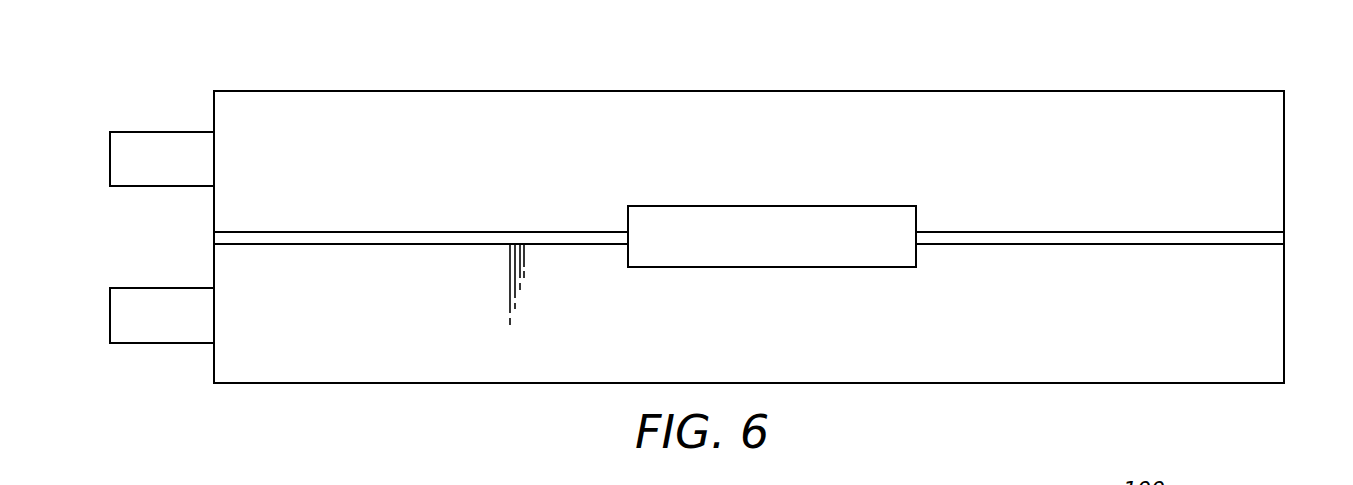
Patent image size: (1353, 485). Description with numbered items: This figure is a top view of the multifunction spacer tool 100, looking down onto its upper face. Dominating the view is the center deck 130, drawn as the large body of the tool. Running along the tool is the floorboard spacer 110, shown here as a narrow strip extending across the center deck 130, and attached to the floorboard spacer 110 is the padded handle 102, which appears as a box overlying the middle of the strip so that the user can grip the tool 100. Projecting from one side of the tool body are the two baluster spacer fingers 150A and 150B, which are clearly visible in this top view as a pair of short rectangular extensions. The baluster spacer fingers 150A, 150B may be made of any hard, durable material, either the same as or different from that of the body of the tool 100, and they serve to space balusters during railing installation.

The tool 100 is at (1273, 68).
The center deck 130 is at (247, 70).
The floorboard spacer 110 is at (307, 231).
The padded handle 102 is at (713, 206).
The baluster spacer finger 150A is at (109, 143).
The baluster spacer finger 150B is at (109, 298).